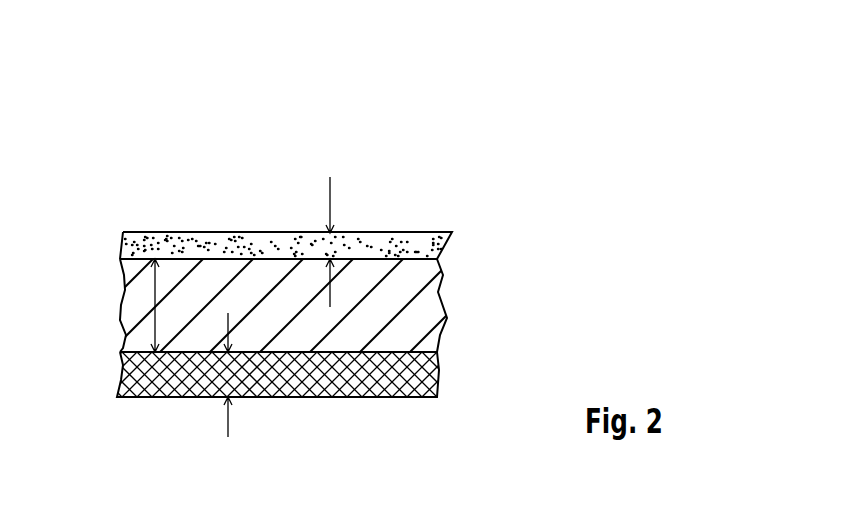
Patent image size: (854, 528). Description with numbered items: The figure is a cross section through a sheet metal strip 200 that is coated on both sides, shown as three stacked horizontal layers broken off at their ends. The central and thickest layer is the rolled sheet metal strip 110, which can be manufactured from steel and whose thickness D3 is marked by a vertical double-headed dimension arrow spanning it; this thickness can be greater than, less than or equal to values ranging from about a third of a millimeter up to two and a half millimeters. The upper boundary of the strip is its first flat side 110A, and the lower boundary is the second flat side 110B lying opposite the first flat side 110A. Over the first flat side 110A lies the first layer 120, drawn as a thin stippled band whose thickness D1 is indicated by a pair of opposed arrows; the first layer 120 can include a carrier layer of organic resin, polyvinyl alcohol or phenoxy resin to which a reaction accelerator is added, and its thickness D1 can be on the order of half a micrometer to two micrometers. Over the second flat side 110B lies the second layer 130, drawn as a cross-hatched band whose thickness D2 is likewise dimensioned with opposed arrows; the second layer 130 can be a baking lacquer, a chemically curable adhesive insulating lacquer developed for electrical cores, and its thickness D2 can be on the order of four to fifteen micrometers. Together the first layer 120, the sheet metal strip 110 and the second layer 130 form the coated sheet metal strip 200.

The sheet metal strip coated on both sides 200 is at (505, 82).
The rolled sheet metal strip 110 is at (433, 302).
The first flat side 110A is at (238, 258).
The second flat side 110B is at (172, 355).
The first layer 120 is at (392, 236).
The second layer 130 is at (366, 386).
The thickness of the first layer D1 is at (328, 225).
The thickness of the second layer D2 is at (225, 393).
The thickness of the sheet metal strip D3 is at (169, 305).